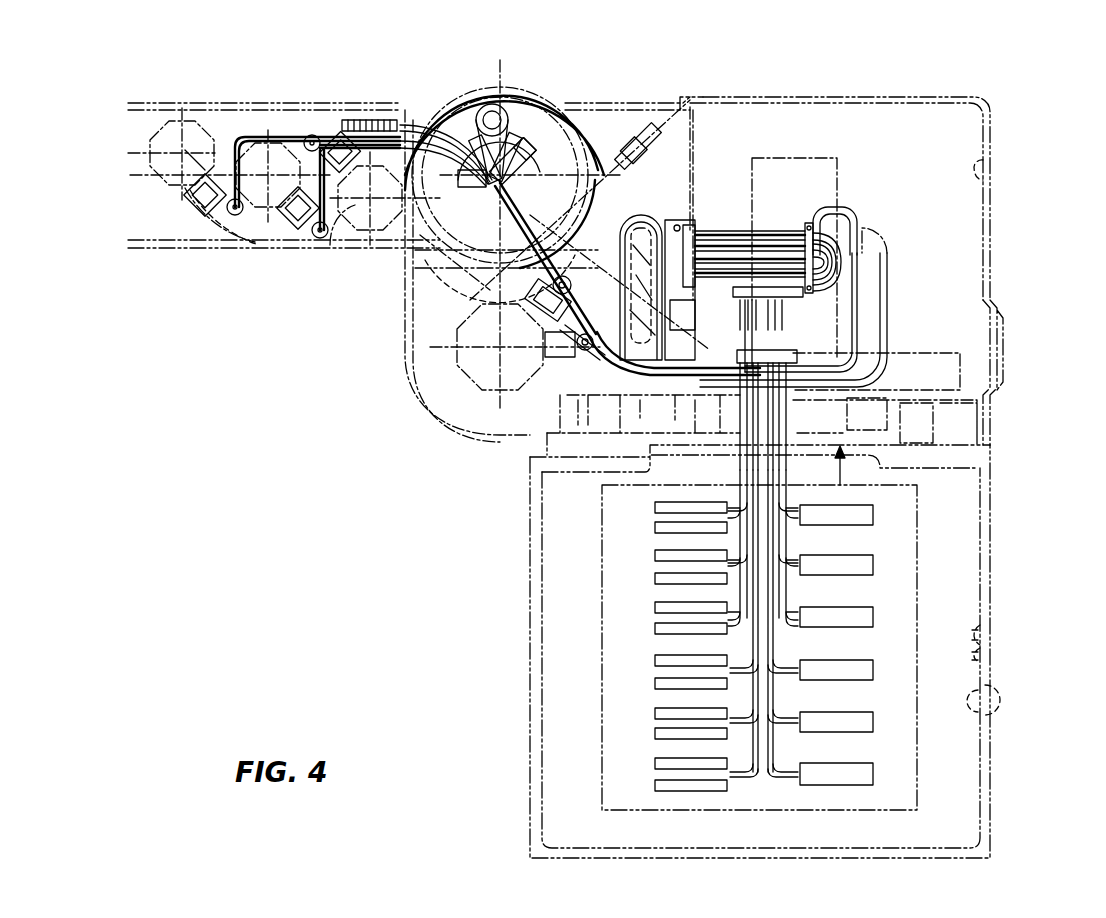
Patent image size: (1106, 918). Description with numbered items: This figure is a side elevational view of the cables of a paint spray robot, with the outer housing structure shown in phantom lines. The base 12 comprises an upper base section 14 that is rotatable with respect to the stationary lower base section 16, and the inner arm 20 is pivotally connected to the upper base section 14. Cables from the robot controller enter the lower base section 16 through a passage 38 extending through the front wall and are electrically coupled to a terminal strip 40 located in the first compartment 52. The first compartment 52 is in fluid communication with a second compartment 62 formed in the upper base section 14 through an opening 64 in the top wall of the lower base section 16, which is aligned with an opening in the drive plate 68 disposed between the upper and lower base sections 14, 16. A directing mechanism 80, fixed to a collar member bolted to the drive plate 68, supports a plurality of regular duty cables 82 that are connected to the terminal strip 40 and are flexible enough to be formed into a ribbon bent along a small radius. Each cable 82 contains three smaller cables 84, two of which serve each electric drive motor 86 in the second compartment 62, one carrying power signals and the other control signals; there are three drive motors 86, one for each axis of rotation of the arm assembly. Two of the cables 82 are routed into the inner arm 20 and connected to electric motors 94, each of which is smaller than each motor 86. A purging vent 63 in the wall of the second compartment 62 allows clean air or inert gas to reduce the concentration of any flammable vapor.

The base 12 is at (990, 425).
The upper base section 14 is at (995, 232).
The lower base section 16 is at (992, 496).
The inner arm 20 is at (318, 103).
The passage 38 is at (992, 655).
The terminal strip 40 is at (920, 565).
The first compartment 52 is at (990, 700).
The second compartment 62 is at (995, 178).
The purging vent 63 is at (630, 138).
The opening 64 is at (918, 488).
The drive plate 68 is at (992, 450).
The directing mechanism 80 is at (803, 338).
The regular duty cables 82 is at (732, 270).
The smaller cables 84 is at (728, 616).
The electric drive motor 86 is at (622, 220).
The electric motor 94 is at (292, 258).